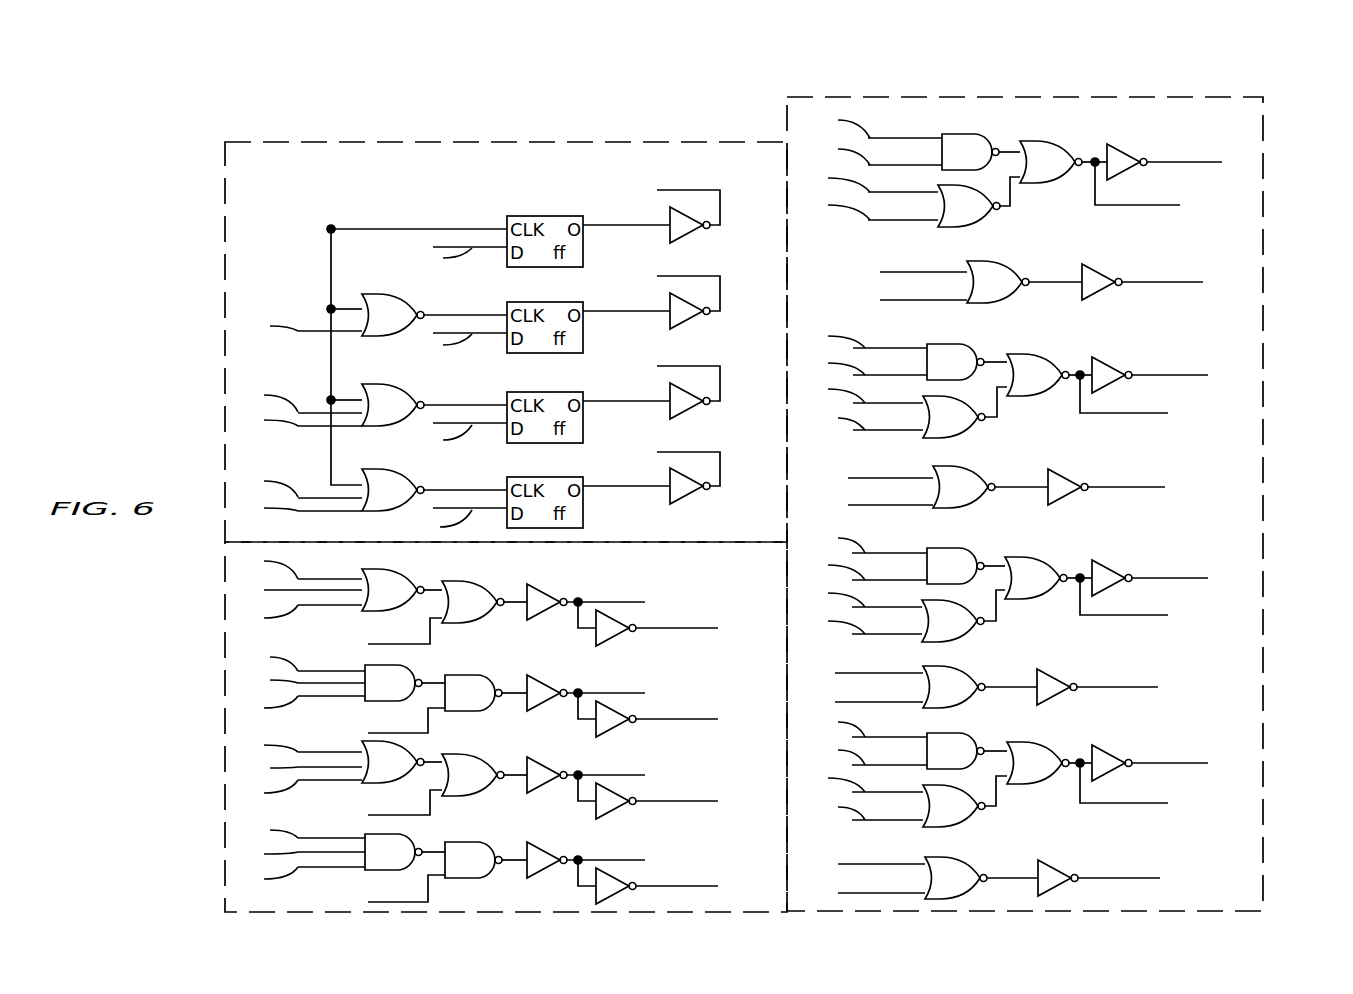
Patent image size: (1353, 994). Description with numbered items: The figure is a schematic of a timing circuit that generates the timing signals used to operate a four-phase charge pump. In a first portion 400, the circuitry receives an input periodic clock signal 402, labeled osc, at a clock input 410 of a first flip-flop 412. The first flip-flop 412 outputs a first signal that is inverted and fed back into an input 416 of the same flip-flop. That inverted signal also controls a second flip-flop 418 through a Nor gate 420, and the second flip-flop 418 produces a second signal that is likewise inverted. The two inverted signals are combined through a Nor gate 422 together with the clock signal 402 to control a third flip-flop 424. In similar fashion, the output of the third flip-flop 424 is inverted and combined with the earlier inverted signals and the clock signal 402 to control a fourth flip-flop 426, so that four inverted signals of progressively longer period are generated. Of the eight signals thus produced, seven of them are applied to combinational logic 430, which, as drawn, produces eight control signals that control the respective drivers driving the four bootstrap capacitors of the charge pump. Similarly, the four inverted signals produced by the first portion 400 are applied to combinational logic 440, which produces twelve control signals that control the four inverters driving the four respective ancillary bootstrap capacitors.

The first portion 400 is at (595, 158).
The input periodic clock signal 402 is at (324, 229).
The clock input 410 is at (507, 228).
The first flip-flop 412 is at (517, 216).
The input 416 is at (507, 249).
The second flip-flop 418 is at (517, 302).
The Nor gate 420 is at (396, 297).
The Nor gate 422 is at (394, 398).
The third flip-flop 424 is at (517, 392).
The fourth flip-flop 426 is at (517, 477).
The combinational logic 430 is at (726, 607).
The combinational logic 440 is at (1230, 142).